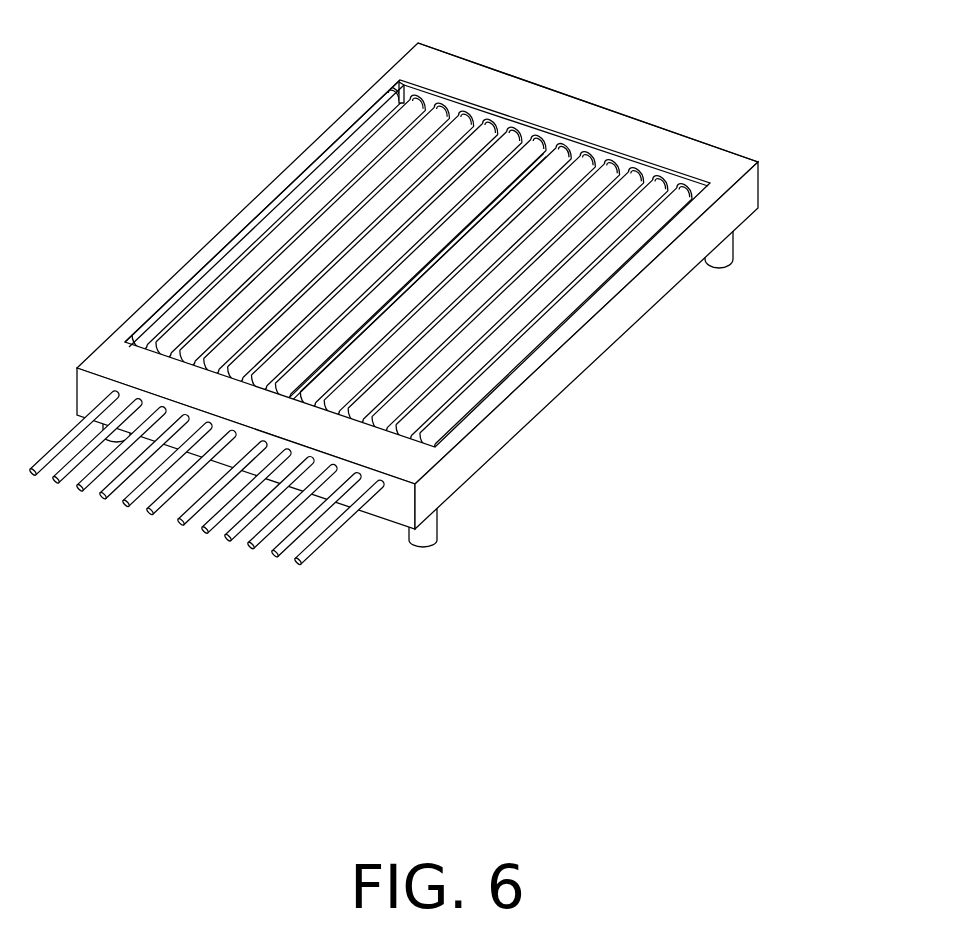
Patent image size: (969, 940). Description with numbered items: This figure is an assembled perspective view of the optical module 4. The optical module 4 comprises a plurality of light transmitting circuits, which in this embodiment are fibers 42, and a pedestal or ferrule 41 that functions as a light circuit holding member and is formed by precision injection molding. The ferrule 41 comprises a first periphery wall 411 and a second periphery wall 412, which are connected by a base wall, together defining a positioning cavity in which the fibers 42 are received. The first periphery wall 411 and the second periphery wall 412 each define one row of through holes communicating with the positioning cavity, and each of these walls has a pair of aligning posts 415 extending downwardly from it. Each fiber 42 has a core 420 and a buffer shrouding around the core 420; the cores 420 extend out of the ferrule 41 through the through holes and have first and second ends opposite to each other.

The optical module 4 is at (437, 319).
The ferrule 41 is at (388, 457).
The first periphery wall 411 is at (180, 385).
The second periphery wall 412 is at (628, 140).
The aligning posts 415 is at (723, 253).
The fibers 42 is at (592, 273).
The core 420 is at (335, 526).